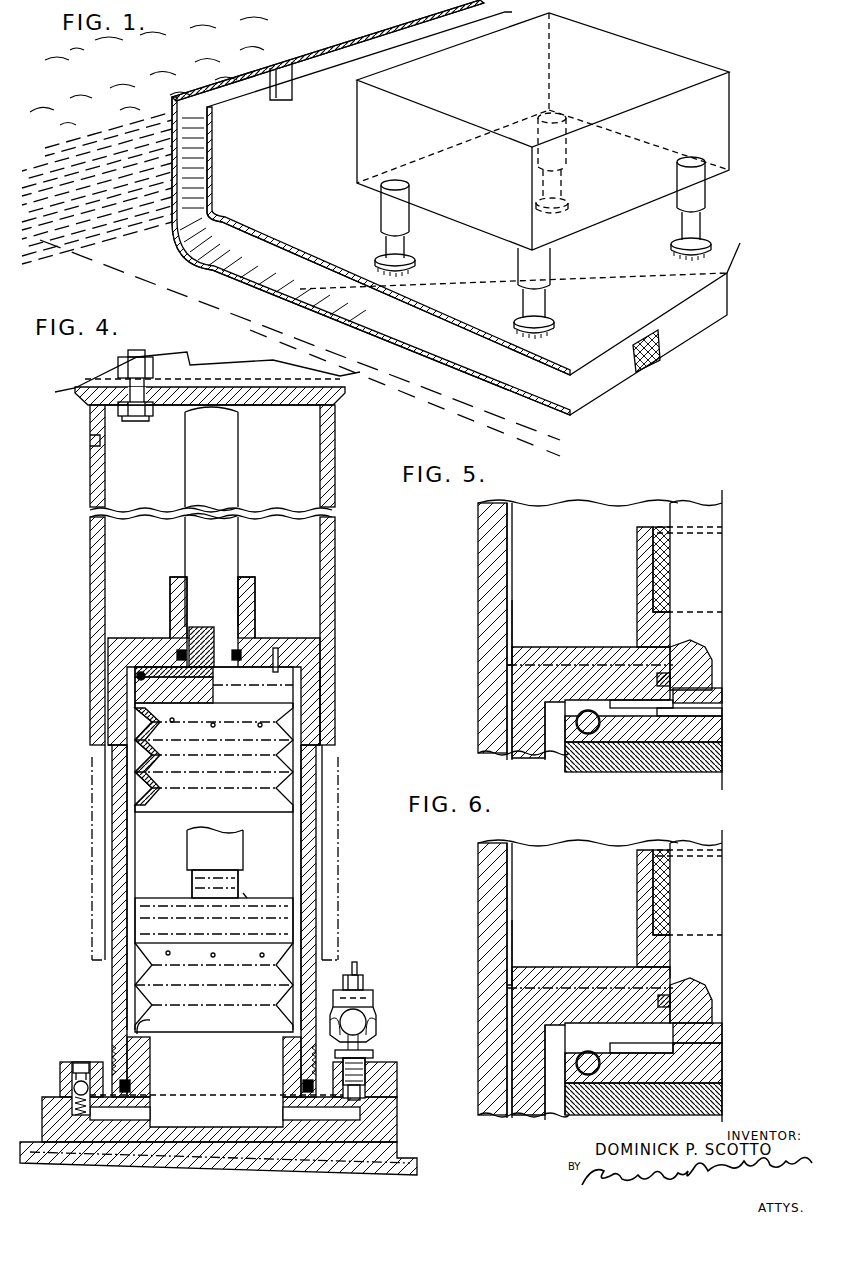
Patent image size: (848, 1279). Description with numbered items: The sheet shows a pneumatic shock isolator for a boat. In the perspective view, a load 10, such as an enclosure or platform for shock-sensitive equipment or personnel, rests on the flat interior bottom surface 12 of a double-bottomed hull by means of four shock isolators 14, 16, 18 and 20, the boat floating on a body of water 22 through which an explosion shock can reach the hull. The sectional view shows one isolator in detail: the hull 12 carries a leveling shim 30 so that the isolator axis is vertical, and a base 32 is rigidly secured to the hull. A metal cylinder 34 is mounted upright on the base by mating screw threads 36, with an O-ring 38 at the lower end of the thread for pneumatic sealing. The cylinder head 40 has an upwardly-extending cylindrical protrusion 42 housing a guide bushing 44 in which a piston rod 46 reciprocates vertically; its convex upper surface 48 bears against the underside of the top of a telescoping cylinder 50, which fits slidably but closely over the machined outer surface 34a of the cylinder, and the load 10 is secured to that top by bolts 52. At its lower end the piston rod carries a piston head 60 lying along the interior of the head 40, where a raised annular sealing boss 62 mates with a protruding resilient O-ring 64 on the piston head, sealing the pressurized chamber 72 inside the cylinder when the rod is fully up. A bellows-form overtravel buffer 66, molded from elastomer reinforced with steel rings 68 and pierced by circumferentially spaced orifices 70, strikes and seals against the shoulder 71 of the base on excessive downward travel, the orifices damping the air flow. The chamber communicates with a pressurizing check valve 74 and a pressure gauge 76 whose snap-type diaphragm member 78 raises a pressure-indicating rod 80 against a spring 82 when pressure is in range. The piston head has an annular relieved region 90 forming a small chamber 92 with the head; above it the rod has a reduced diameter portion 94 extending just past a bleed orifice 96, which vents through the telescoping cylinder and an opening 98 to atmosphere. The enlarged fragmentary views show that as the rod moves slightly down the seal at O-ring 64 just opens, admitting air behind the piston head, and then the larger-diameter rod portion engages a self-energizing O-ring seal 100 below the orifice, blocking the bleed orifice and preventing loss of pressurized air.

In FIG. 1, the load 10 is at (624, 48).
In FIG. 4, the load 10 is at (190, 367).
In FIG. 1, the interior bottom surface of boat hull 12 is at (294, 220).
In FIG. 4, the interior bottom surface of boat hull 12 is at (416, 1168).
In FIG. 1, the shock isolator 14 is at (410, 240).
In FIG. 1, the shock isolator 16 is at (548, 295).
In FIG. 1, the shock isolator 18 is at (683, 228).
In FIG. 1, the shock isolator 20 is at (566, 181).
In FIG. 1, the body of water 22 is at (128, 170).
In FIG. 4, the leveling shim 30 is at (384, 1142).
In FIG. 4, the base 32 is at (402, 1095).
In FIG. 4, the metal cylinder 34 is at (318, 905).
In FIG. 5, the metal cylinder 34 is at (506, 750).
In FIG. 6, the metal cylinder 34 is at (518, 1105).
In FIG. 4, the outer machined surface of cylinder 34a is at (322, 676).
In FIG. 5, the outer machined surface of cylinder 34a is at (512, 665).
In FIG. 6, the outer machined surface of cylinder 34a is at (512, 985).
In FIG. 4, the screw threads 36 is at (298, 1062).
In FIG. 4, the O-ring 38 is at (302, 1085).
In FIG. 4, the cylinder head 40 is at (288, 640).
In FIG. 5, the cylinder head 40 is at (546, 647).
In FIG. 6, the cylinder head 40 is at (556, 968).
In FIG. 4, the cylindrical protrusion 42 is at (172, 584).
In FIG. 5, the cylindrical protrusion 42 is at (637, 527).
In FIG. 6, the cylindrical protrusion 42 is at (637, 862).
In FIG. 4, the guide bushing 44 is at (255, 590).
In FIG. 5, the guide bushing 44 is at (655, 550).
In FIG. 6, the guide bushing 44 is at (655, 897).
In FIG. 4, the piston rod 46 is at (272, 556).
In FIG. 5, the piston rod 46 is at (680, 505).
In FIG. 6, the piston rod 46 is at (712, 886).
In FIG. 4, the convex surface 48 is at (238, 406).
In FIG. 4, the telescoping cylinder 50 is at (372, 431).
In FIG. 5, the telescoping cylinder 50 is at (520, 512).
In FIG. 6, the telescoping cylinder 50 is at (530, 857).
In FIG. 4, the bolt 52 is at (133, 413).
In FIG. 4, the piston head 60 is at (230, 680).
In FIG. 5, the piston head 60 is at (563, 722).
In FIG. 6, the piston head 60 is at (716, 1072).
In FIG. 4, the annular sealing boss 62 is at (276, 666).
In FIG. 4, the O-ring 64 is at (138, 676).
In FIG. 5, the O-ring 64 is at (590, 735).
In FIG. 6, the O-ring 64 is at (591, 1058).
In FIG. 4, the overtravel buffer 66 is at (256, 800).
In FIG. 5, the overtravel buffer 66 is at (700, 758).
In FIG. 6, the overtravel buffer 66 is at (716, 1100).
In FIG. 4, the steel rings 68 is at (166, 778).
In FIG. 4, the orifices 70 is at (258, 727).
In FIG. 4, the shoulder 71 is at (150, 1030).
In FIG. 4, the chamber 72 is at (135, 828).
In FIG. 5, the chamber 72 is at (553, 718).
In FIG. 6, the chamber 72 is at (556, 1115).
In FIG. 4, the pressurizing check valve 74 is at (72, 1086).
In FIG. 4, the pressure gauge 76 is at (364, 990).
In FIG. 4, the snap-type diaphragm member 78 is at (368, 1031).
In FIG. 4, the pressure-indicating rod 80 is at (360, 965).
In FIG. 4, the spring 82 is at (373, 1000).
In FIG. 4, the annular relieved region 90 is at (184, 700).
In FIG. 5, the annular relieved region 90 is at (633, 722).
In FIG. 6, the annular relieved region 90 is at (612, 1063).
In FIG. 4, the small chamber 92 is at (180, 660).
In FIG. 5, the small chamber 92 is at (718, 713).
In FIG. 4, the reduced diameter portion 94 is at (236, 648).
In FIG. 5, the reduced diameter portion 94 is at (700, 694).
In FIG. 6, the reduced diameter portion 94 is at (703, 1043).
In FIG. 4, the bleed orifice 96 is at (186, 638).
In FIG. 5, the bleed orifice 96 is at (662, 647).
In FIG. 6, the bleed orifice 96 is at (662, 977).
In FIG. 4, the opening 98 is at (90, 441).
In FIG. 4, the self-energizing O-ring seal 100 is at (196, 640).
In FIG. 5, the self-energizing O-ring seal 100 is at (690, 680).
In FIG. 6, the self-energizing O-ring seal 100 is at (705, 1003).